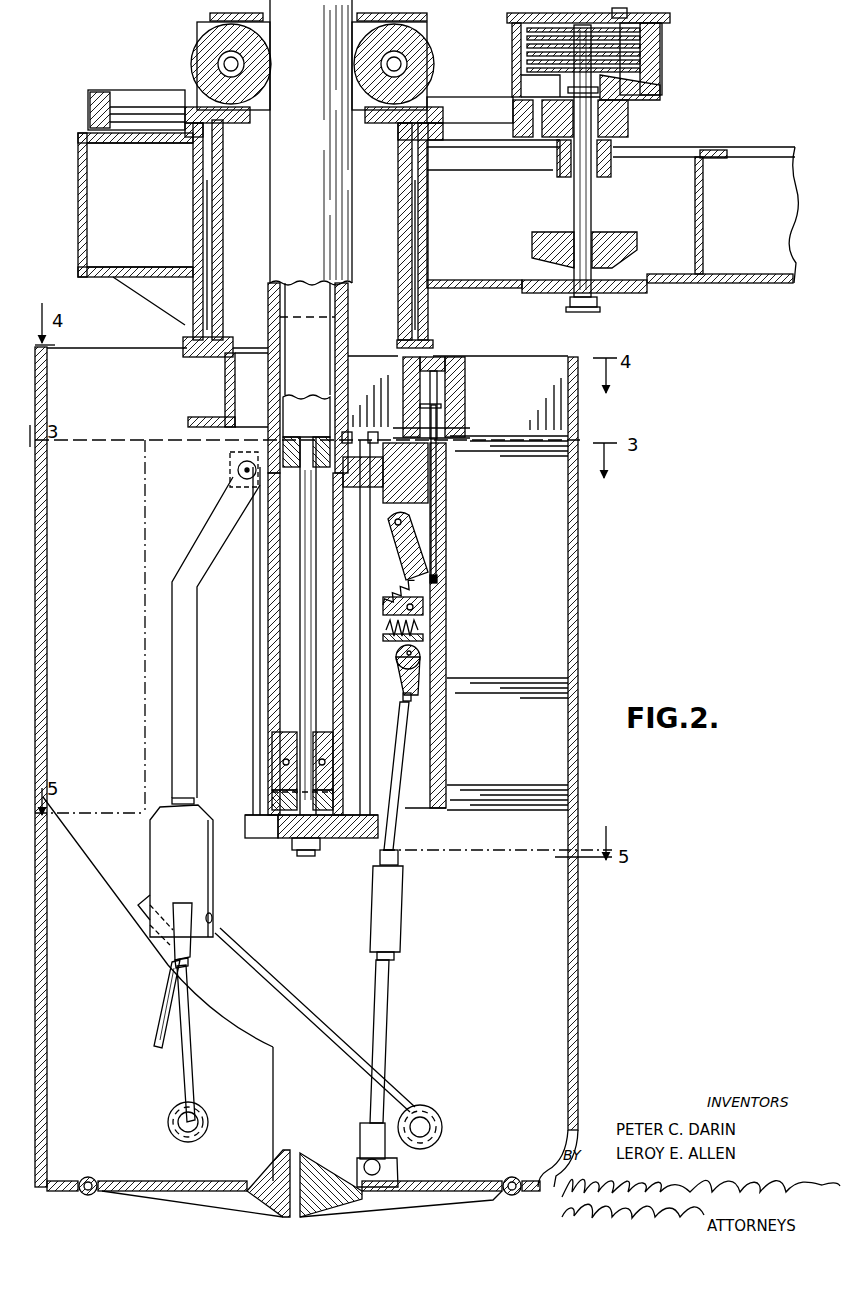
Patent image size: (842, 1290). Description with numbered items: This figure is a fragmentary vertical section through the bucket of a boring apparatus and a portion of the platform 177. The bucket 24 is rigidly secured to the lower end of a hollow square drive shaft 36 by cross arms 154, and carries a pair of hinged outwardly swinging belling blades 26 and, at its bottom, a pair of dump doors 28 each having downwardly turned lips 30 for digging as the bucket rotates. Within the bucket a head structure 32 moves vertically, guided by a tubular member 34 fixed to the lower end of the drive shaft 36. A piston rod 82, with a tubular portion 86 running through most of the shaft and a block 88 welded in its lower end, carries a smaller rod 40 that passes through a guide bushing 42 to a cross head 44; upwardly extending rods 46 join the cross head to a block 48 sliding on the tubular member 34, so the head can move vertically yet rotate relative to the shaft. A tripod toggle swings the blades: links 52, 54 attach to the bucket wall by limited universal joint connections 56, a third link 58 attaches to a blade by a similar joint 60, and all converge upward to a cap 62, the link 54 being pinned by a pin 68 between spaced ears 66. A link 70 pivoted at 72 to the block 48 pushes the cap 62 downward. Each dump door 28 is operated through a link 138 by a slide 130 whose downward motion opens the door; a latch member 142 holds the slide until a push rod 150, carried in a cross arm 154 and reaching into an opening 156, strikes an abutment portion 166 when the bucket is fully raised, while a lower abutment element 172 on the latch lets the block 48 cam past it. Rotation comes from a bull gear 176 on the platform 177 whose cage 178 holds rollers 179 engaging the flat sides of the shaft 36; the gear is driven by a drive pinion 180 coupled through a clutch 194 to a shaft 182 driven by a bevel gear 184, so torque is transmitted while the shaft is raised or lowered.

The bucket 24 is at (578, 565).
The belling blades 26 is at (87, 893).
The dump doors 28 is at (450, 1183).
The downwardly turned lips 30 is at (322, 1200).
The head structure 32 is at (250, 692).
The tubular member 34 is at (280, 595).
The drive shaft 36 is at (268, 228).
The rod 40 is at (300, 553).
The guide bushing 42 is at (283, 733).
The cross head 44 is at (275, 840).
The upwardly extending rods 46 is at (253, 643).
The block 48 is at (230, 457).
The link 52 is at (162, 1015).
The link 54 is at (300, 1012).
The limited universal joint connection 56 is at (440, 1123).
The third link 58 is at (173, 1060).
The limited universal joint 60 is at (205, 1117).
The cap 62 is at (216, 877).
The spaced ears 66 is at (196, 945).
The pin 68 is at (212, 918).
The link 70 is at (178, 677).
The pivot 72 is at (243, 473).
The piston rod 82 is at (290, 302).
The tubular portion 86 is at (298, 393).
The block 88 is at (306, 431).
The slide 130 is at (420, 482).
The link 138 is at (388, 1023).
The latch member 142 is at (417, 553).
The push rod 150 is at (440, 527).
The cross arms 154 is at (226, 388).
The opening 156 is at (437, 517).
The abutment portion 166 is at (433, 346).
The lower abutment element 172 is at (385, 602).
The bull gear 176 is at (142, 92).
The platform 177 is at (78, 216).
The cage 178 is at (423, 28).
The rollers 179 is at (432, 66).
The drive pinion 180 is at (628, 137).
The shaft 182 is at (595, 207).
The bevel gear 184 is at (625, 252).
The clutch 194 is at (652, 64).